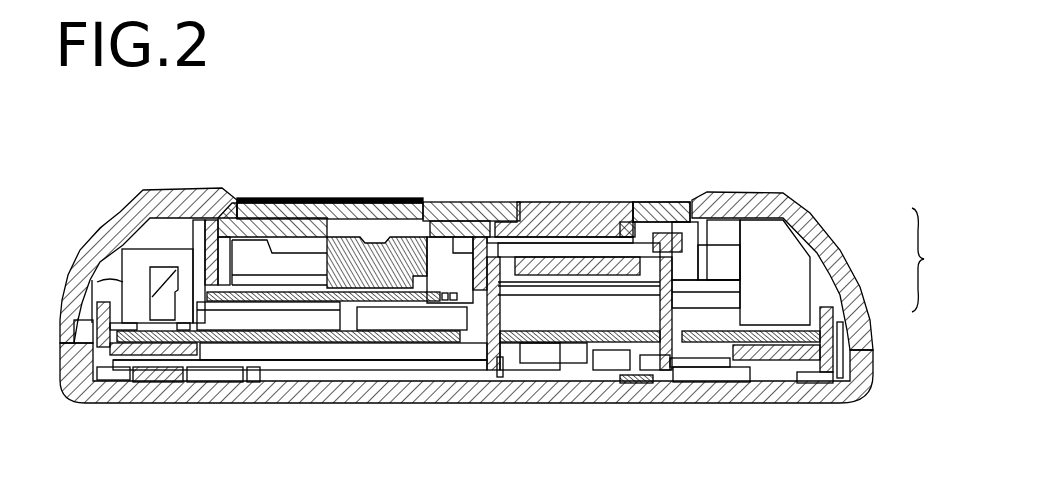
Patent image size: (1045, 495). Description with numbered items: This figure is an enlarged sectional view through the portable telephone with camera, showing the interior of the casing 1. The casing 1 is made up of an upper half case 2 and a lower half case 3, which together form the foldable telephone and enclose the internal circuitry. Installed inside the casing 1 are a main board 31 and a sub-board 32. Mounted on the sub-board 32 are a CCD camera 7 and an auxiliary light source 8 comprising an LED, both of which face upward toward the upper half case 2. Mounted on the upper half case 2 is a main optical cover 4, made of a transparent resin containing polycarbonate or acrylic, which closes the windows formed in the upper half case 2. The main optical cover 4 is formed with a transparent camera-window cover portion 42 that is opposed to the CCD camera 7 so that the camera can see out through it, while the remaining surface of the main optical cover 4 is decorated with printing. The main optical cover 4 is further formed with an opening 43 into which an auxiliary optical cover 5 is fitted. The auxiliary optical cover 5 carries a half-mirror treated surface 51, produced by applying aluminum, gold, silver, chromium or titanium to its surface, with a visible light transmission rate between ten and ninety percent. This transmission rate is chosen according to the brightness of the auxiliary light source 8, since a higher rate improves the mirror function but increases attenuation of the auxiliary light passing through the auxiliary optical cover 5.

The casing 1 is at (928, 260).
The upper half case 2 is at (827, 229).
The lower half case 3 is at (873, 373).
The main optical cover 4 is at (289, 201).
The camera-window cover portion 42 is at (375, 198).
The opening 43 is at (535, 202).
The auxiliary optical cover 5 is at (630, 203).
The half-mirror treated surface 51 is at (590, 199).
The CCD camera 7 is at (422, 200).
The auxiliary light source 8 is at (670, 198).
The main board 31 is at (343, 343).
The sub-board 32 is at (243, 272).